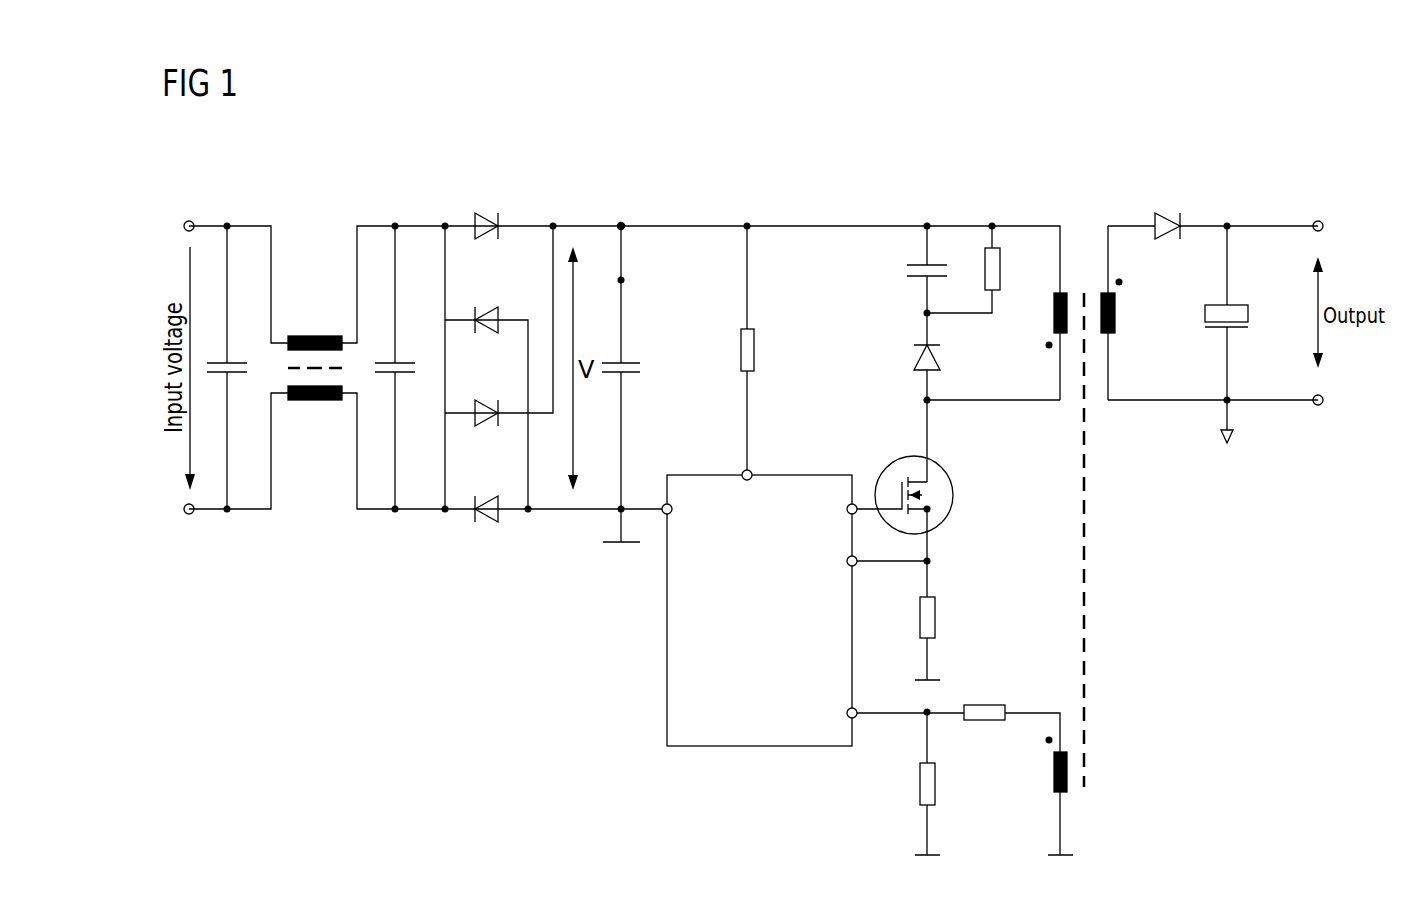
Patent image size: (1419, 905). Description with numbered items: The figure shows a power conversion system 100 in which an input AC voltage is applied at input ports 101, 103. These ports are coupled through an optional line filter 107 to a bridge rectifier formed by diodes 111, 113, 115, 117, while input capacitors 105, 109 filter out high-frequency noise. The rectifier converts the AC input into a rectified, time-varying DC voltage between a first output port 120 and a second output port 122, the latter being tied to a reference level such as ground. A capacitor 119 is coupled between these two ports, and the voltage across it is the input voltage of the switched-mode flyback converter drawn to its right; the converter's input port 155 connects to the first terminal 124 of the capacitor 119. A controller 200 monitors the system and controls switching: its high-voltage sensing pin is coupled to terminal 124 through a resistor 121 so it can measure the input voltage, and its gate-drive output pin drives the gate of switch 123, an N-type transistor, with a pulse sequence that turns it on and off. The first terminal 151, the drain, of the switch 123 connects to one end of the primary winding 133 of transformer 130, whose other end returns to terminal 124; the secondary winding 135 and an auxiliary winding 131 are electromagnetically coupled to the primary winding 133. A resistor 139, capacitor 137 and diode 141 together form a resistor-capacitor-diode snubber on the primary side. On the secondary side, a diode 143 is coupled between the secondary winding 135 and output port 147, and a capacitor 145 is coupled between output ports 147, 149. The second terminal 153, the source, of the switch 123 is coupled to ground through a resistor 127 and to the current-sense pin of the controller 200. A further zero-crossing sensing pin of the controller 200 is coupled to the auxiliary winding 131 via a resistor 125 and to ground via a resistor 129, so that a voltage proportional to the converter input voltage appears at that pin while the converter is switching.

The power conversion system 100 is at (878, 133).
The input port 101 is at (193, 220).
The input port 103 is at (191, 515).
The input capacitor 105 is at (232, 362).
The line filter 107 is at (328, 335).
The input capacitor 109 is at (399, 362).
The diode 111 is at (480, 216).
The diode 113 is at (484, 312).
The diode 115 is at (486, 404).
The diode 117 is at (484, 500).
The capacitor 119 is at (631, 362).
The first output port 120 is at (620, 221).
The resistor 121 is at (755, 351).
The second output port 122 is at (618, 512).
The switch 123 is at (955, 495).
The first terminal 124 is at (624, 280).
The resistor 125 is at (985, 705).
The resistor 127 is at (937, 617).
The resistor 129 is at (920, 781).
The transformer 130 is at (1141, 180).
The auxiliary winding 131 is at (1053, 771).
The primary winding 133 is at (1052, 300).
The secondary winding 135 is at (1116, 300).
The capacitor 137 is at (906, 271).
The resistor 139 is at (985, 262).
The diode 141 is at (918, 358).
The diode 143 is at (1166, 218).
The capacitor 145 is at (1240, 306).
The output port 147 is at (1322, 220).
The output port 149 is at (1320, 406).
The first terminal 151 is at (921, 401).
The second terminal 153 is at (933, 559).
The input port 155 is at (748, 221).
The controller 200 is at (667, 612).